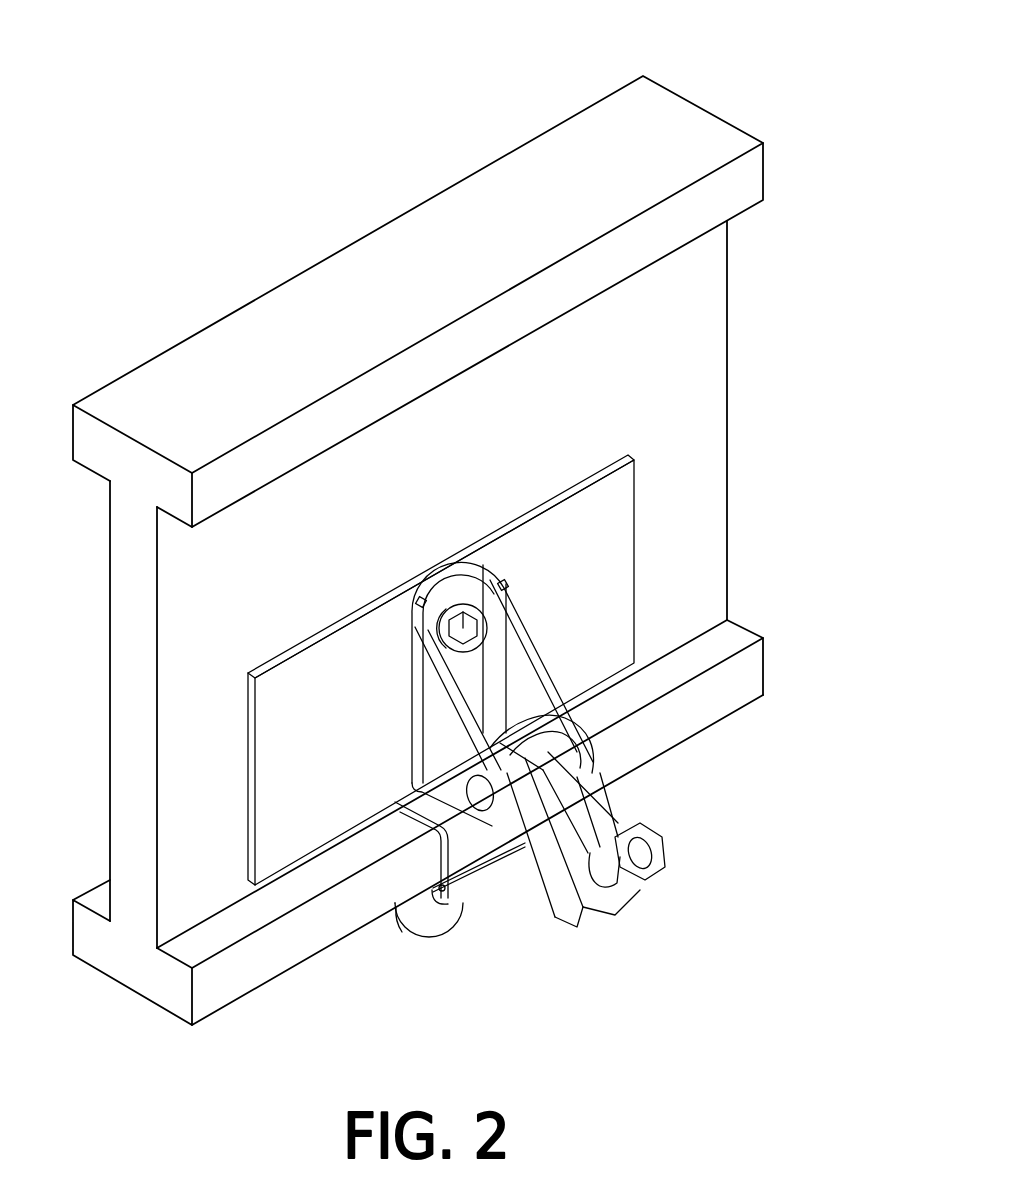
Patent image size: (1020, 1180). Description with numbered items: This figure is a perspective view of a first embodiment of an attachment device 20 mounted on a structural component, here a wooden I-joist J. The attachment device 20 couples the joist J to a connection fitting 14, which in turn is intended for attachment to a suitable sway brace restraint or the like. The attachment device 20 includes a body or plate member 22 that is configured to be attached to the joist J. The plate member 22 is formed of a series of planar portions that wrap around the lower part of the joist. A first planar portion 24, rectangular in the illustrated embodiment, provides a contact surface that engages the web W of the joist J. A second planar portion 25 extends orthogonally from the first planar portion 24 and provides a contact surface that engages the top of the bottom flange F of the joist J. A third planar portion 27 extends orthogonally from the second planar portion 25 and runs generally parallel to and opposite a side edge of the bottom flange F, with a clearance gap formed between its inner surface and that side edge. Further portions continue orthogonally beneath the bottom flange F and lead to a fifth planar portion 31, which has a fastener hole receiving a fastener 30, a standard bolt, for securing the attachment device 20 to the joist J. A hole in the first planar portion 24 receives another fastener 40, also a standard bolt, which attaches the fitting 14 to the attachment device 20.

The wooden I-joist J is at (650, 74).
The bottom flange F is at (420, 243).
The web W is at (728, 290).
The attachment device 20 is at (368, 584).
The plate member 22 is at (632, 508).
The first planar portion 24 is at (620, 583).
The fastener 30 is at (472, 630).
The connection fitting 14 is at (558, 718).
The third planar portion 27 is at (478, 845).
The second planar portion 25 is at (395, 848).
The fastener 40 is at (481, 880).
The fifth planar portion 31 is at (428, 925).